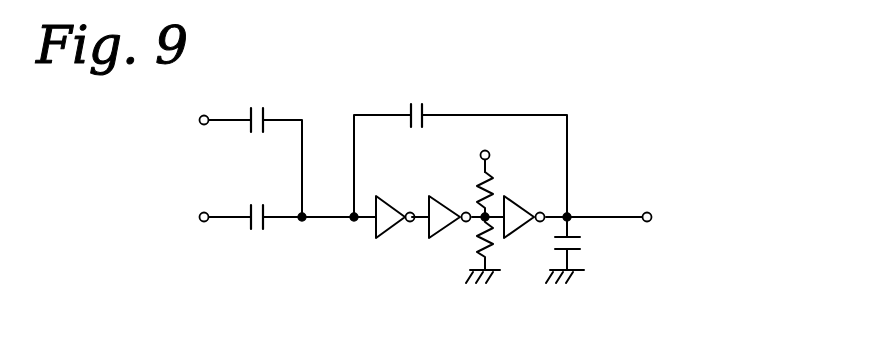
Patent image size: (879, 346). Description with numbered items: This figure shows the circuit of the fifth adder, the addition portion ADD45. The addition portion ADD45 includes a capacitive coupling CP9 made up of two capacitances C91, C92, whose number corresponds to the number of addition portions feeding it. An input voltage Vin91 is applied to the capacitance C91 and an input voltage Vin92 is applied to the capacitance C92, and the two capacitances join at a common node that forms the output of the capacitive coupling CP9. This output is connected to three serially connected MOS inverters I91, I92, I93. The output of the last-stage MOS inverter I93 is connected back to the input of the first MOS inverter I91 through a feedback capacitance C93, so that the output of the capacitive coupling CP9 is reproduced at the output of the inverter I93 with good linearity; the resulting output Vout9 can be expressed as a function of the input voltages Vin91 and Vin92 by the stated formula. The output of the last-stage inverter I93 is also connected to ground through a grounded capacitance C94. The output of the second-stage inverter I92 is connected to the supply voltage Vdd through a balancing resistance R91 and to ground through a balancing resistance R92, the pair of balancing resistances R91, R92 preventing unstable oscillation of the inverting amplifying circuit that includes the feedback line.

The capacitance C91 is at (254, 107).
The capacitance C92 is at (254, 204).
The feedback capacitance C93 is at (414, 99).
The grounded capacitance C94 is at (587, 250).
The MOS inverter I91 is at (394, 204).
The MOS inverter I92 is at (449, 204).
The MOS inverter I93 is at (524, 204).
The balancing resistance R91 is at (477, 168).
The balancing resistance R92 is at (476, 250).
The capacitive coupling CP9 is at (305, 235).
The addition portion ADD45 is at (622, 140).
The input voltage Vin91 is at (168, 121).
The input voltage Vin92 is at (168, 218).
The output Vout9 is at (681, 217).
The supply voltage Vdd is at (508, 157).